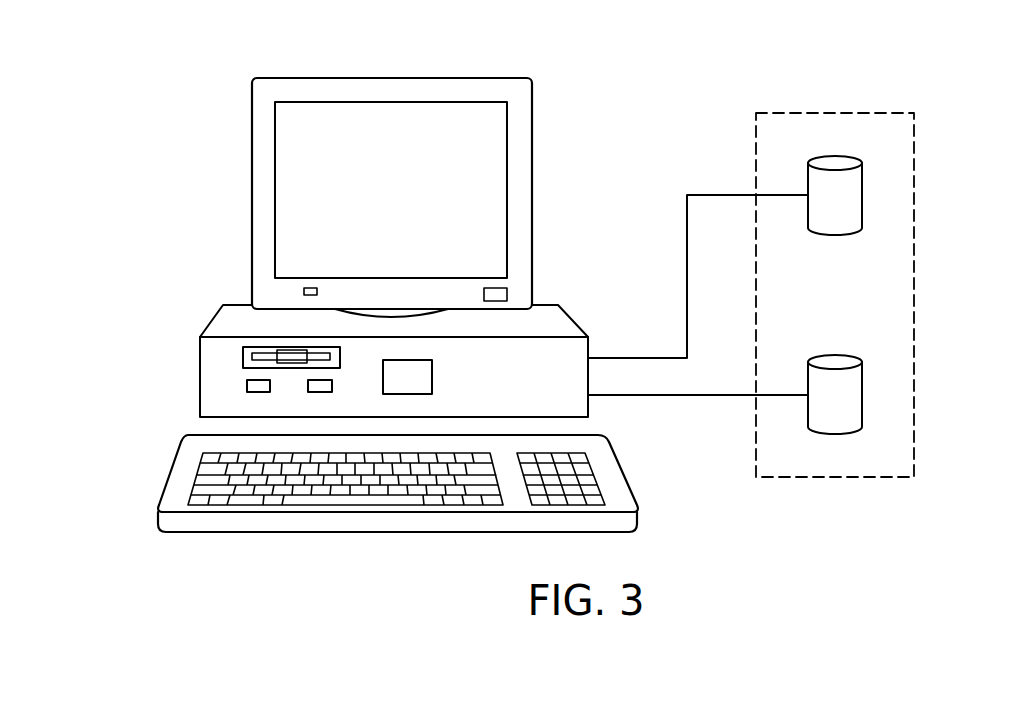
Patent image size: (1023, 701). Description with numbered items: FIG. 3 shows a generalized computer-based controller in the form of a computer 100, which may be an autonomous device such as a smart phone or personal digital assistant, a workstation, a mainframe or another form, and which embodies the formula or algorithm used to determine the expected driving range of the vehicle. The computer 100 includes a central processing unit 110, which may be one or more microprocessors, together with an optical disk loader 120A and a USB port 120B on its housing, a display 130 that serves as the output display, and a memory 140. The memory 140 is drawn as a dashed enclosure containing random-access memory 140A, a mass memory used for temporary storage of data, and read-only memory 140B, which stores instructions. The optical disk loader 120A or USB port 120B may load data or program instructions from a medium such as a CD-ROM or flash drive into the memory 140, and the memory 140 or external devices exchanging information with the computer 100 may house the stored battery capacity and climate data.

The computer 100 is at (135, 117).
The central processing unit 110 is at (432, 384).
The optical disk loader 120A is at (247, 355).
The USB port 120B is at (247, 385).
The display 130 is at (397, 112).
The memory 140 is at (914, 303).
The random-access memory 140A is at (833, 236).
The read-only memory 140B is at (835, 357).